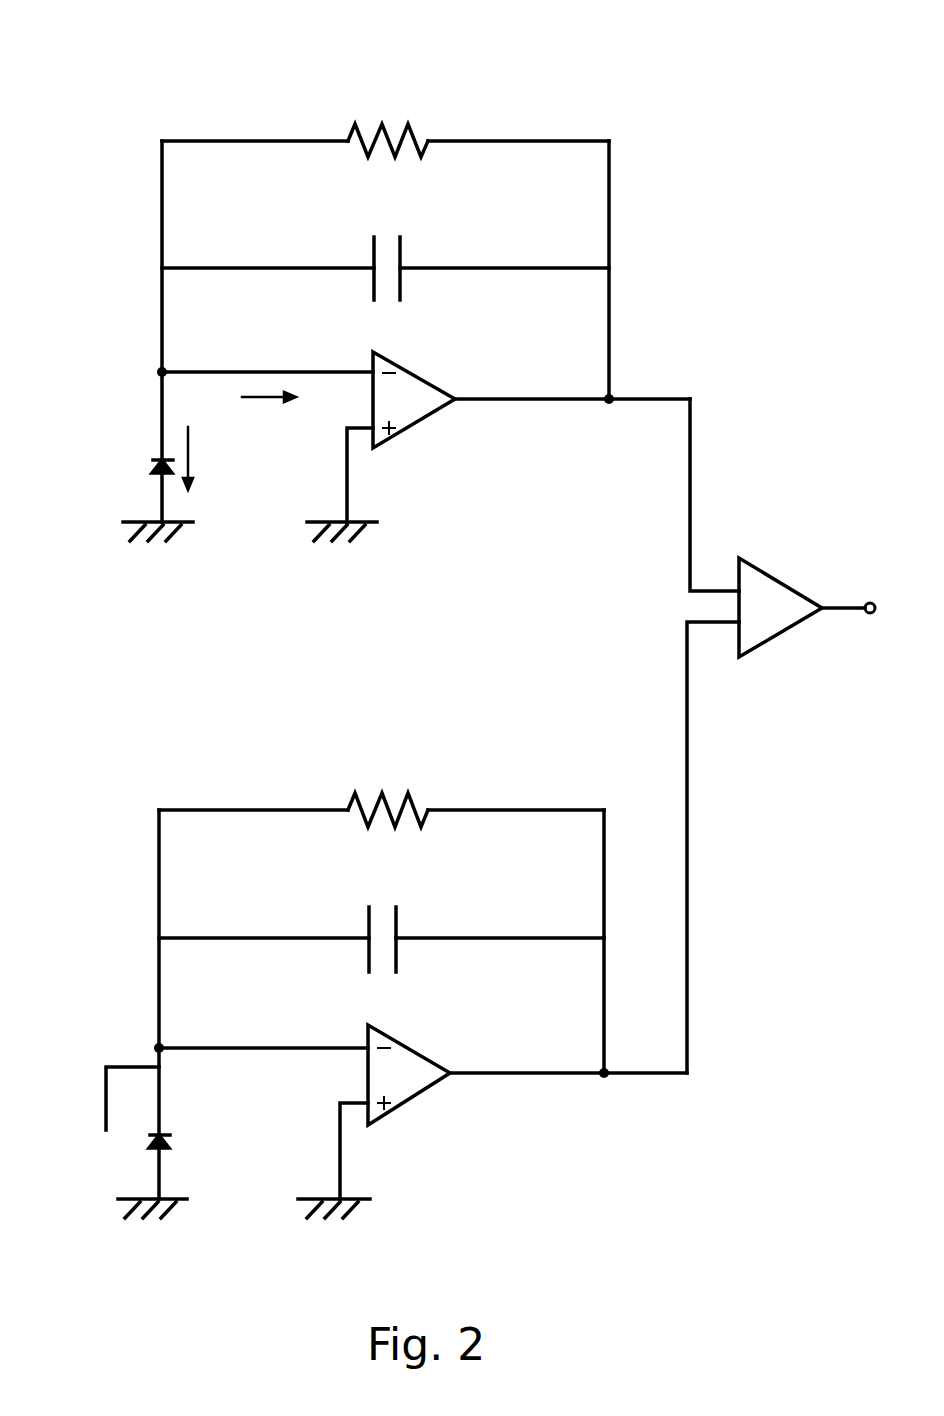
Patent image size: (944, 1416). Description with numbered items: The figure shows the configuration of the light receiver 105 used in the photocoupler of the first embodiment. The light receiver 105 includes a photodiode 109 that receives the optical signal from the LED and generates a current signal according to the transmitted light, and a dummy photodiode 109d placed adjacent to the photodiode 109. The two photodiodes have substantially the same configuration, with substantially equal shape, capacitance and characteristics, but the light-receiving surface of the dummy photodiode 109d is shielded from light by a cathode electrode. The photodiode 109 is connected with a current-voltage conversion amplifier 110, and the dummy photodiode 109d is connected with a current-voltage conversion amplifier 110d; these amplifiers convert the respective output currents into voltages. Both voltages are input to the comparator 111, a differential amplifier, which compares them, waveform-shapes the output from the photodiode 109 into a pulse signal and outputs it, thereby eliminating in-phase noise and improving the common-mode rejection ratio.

The light receiver 105 is at (781, 31).
The photodiode 109 is at (145, 465).
The dummy photodiode 109d is at (137, 1143).
The current-voltage conversion amplifier 110 is at (418, 417).
The current-voltage conversion amplifier 110d is at (412, 1090).
The comparator 111 is at (765, 623).